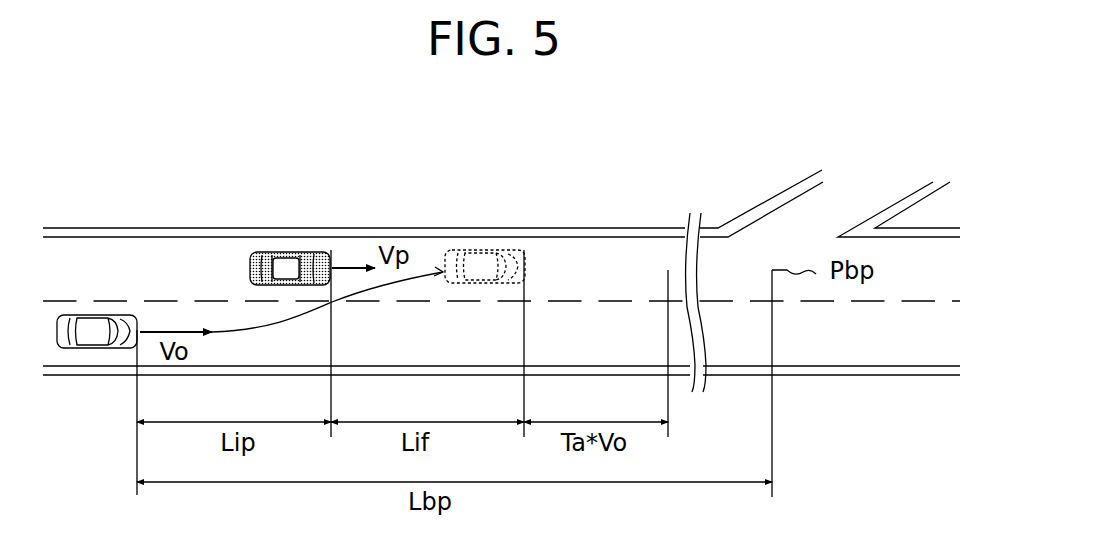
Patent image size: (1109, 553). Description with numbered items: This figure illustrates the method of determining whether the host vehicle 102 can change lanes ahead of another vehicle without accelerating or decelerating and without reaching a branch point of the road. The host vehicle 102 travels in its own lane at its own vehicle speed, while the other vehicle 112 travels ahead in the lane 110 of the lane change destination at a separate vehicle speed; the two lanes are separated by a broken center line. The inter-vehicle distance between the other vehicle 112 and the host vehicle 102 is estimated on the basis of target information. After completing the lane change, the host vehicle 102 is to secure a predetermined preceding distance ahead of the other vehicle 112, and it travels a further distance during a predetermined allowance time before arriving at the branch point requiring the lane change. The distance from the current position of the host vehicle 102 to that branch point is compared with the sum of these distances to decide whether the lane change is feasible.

The lane of the lane change destination 110 is at (197, 263).
The other vehicle 112 is at (288, 255).
The host vehicle 102 is at (89, 330).